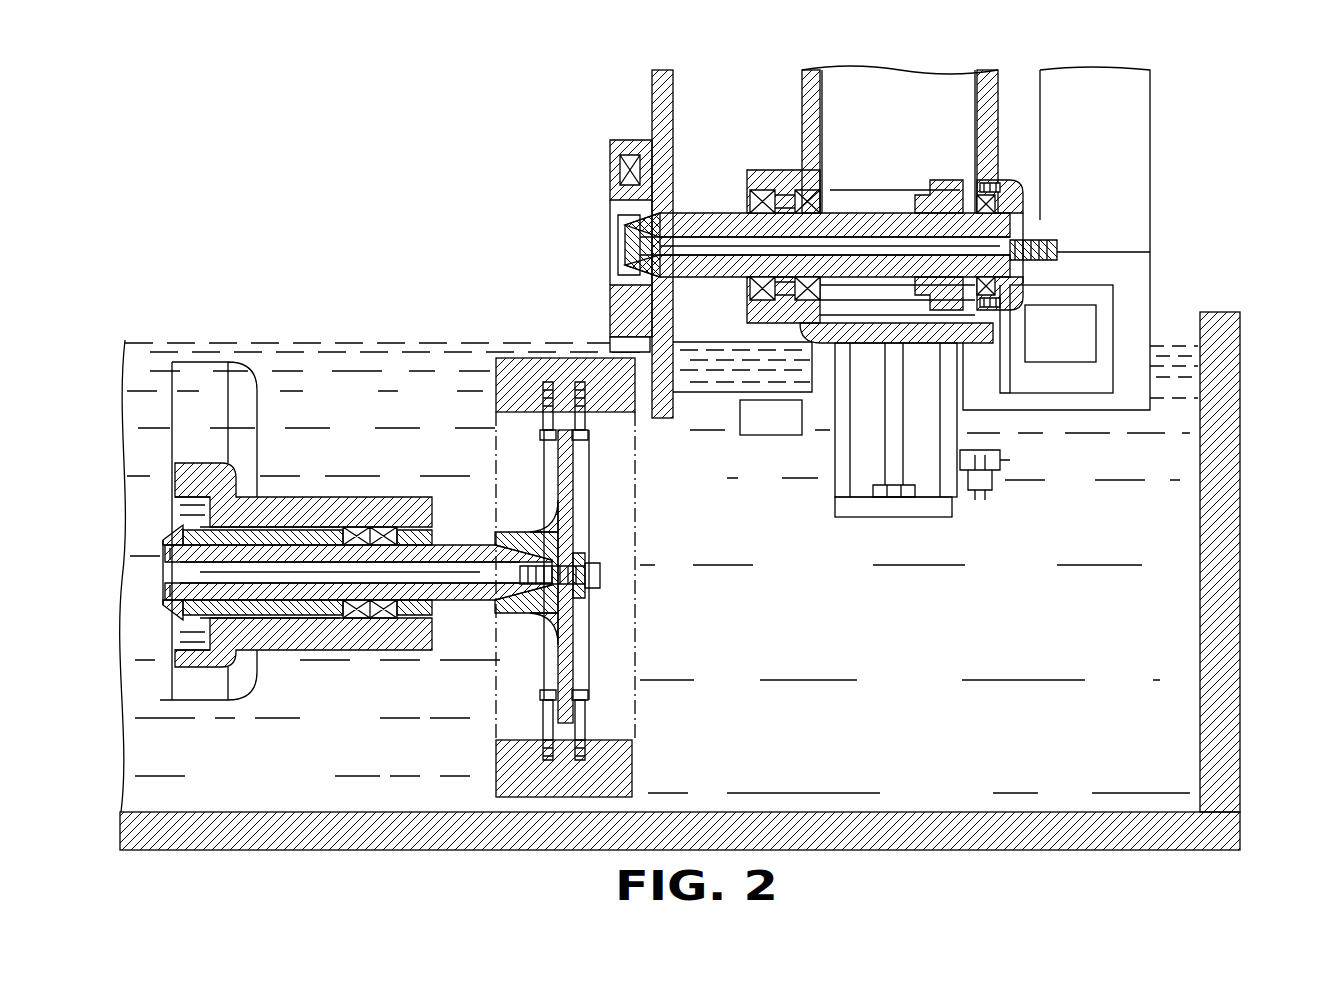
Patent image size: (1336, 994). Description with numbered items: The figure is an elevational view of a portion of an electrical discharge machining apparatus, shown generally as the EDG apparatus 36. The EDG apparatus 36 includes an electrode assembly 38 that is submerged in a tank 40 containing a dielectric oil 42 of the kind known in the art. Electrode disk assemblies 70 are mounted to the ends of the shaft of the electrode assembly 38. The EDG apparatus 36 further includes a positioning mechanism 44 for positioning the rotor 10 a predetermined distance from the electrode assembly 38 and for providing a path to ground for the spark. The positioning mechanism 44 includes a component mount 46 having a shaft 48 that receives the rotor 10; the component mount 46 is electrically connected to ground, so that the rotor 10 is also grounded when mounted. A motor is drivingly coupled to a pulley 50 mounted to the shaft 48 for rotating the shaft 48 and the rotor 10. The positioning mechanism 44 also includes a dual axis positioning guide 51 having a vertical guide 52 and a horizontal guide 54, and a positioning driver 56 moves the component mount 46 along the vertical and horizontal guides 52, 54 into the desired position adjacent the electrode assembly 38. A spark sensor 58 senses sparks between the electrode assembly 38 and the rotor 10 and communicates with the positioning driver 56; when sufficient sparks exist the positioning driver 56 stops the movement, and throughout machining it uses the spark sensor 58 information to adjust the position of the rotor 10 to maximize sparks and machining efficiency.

The rotor 10 is at (625, 138).
The EDG apparatus 36 is at (477, 152).
The electrode assembly 38 is at (262, 328).
The tank 40 is at (1240, 348).
The dielectric oil 42 is at (962, 652).
The positioning mechanism 44 is at (779, 70).
The component mount 46 is at (710, 156).
The shaft 48 is at (855, 215).
The pulley 50 is at (950, 182).
The dual axis positioning guide 51 is at (1183, 152).
The vertical guide 52 is at (831, 485).
The horizontal guide 54 is at (706, 380).
The positioning driver 56 is at (1062, 360).
The spark sensor 58 is at (776, 435).
The electrode disk assemblies 70 is at (632, 777).